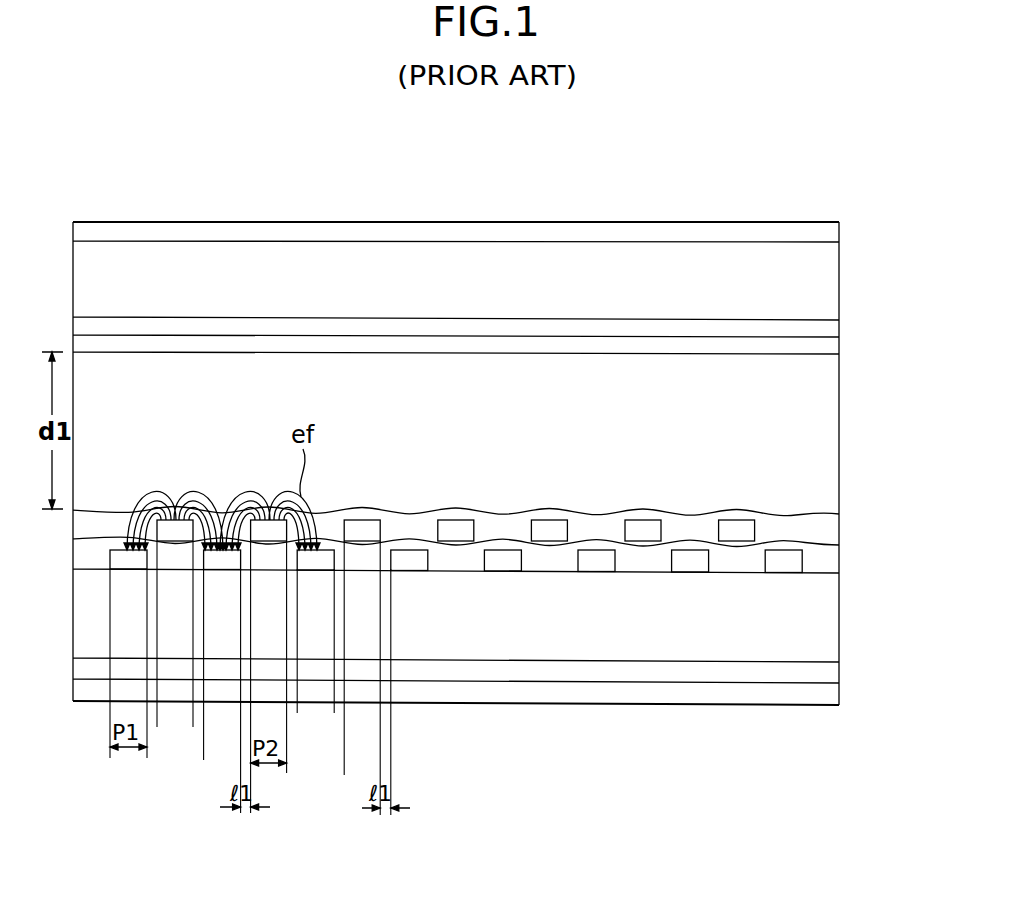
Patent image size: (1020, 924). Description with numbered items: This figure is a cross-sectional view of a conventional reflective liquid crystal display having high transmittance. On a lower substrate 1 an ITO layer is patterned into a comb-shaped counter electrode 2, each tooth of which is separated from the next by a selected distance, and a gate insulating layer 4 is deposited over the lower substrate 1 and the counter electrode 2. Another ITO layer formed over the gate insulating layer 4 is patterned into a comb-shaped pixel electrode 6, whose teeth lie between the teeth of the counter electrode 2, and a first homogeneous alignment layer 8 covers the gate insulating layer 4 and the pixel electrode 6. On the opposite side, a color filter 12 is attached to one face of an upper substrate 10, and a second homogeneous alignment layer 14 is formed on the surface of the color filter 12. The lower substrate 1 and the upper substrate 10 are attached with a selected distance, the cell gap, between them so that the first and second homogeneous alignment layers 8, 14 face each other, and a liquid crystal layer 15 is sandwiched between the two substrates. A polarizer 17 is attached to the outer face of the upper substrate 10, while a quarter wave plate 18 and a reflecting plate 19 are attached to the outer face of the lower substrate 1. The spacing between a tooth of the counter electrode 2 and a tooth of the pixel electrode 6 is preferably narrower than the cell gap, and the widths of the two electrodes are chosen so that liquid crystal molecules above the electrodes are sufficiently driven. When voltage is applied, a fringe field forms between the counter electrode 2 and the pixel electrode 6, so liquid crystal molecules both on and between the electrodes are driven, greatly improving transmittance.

The lower substrate 1 is at (834, 632).
The counter electrode 2 is at (784, 563).
The gate insulating layer 4 is at (834, 565).
The pixel electrode 6 is at (731, 530).
The first homogeneous alignment layer 8 is at (834, 528).
The upper substrate 10 is at (834, 280).
The color filter 12 is at (834, 322).
The second homogeneous alignment layer 14 is at (834, 348).
The liquid crystal layer 15 is at (834, 447).
The polarizer 17 is at (834, 237).
The quarter wave plate 18 is at (834, 668).
The reflecting plate 19 is at (834, 695).